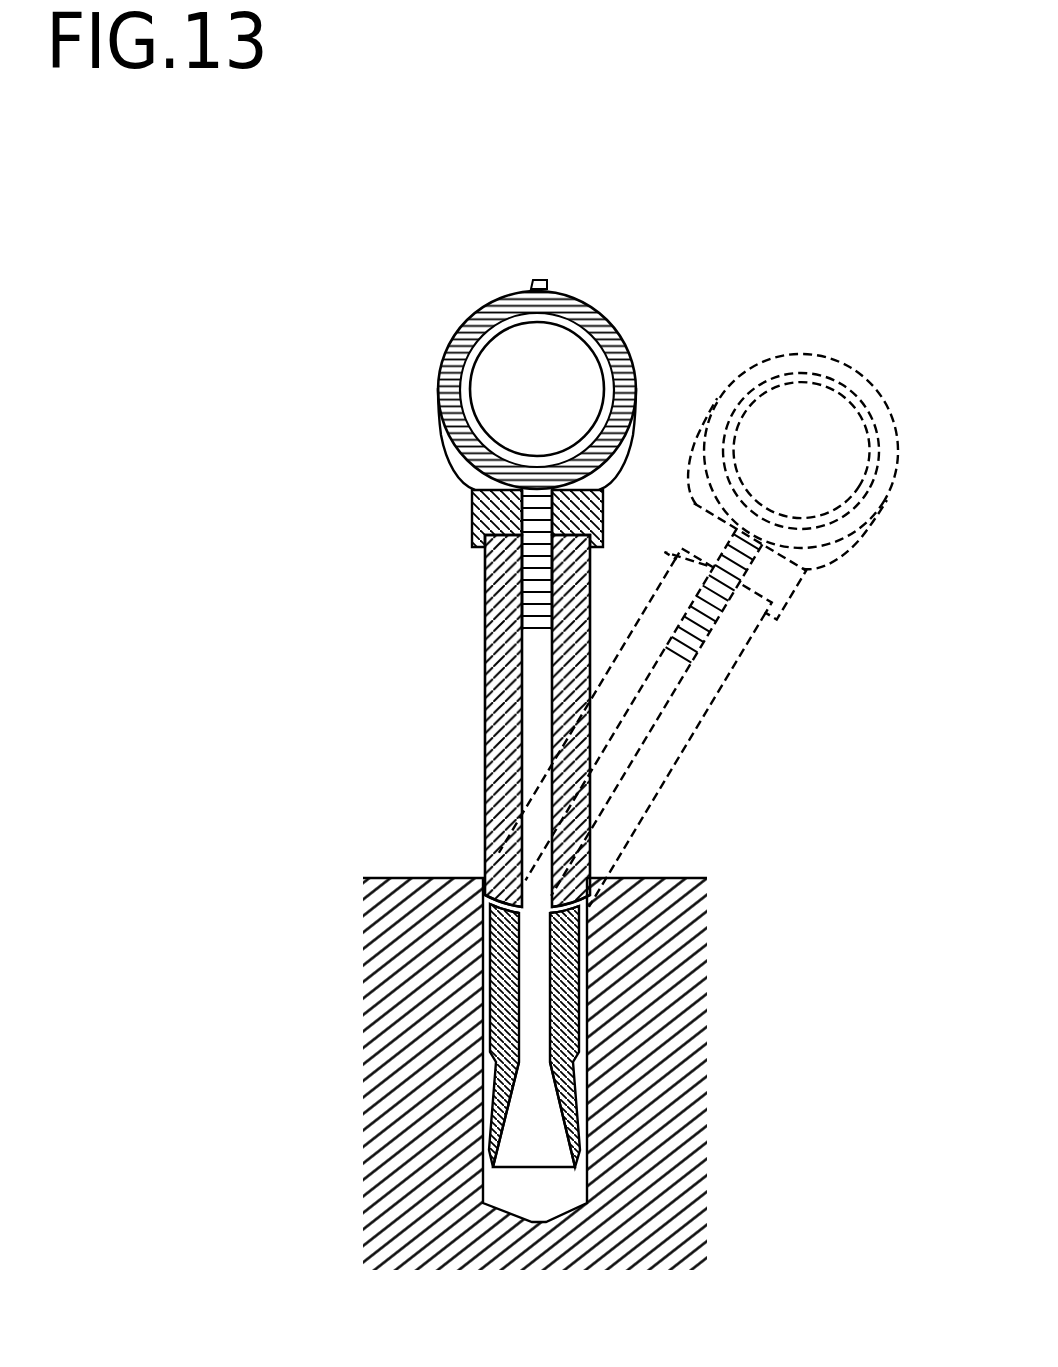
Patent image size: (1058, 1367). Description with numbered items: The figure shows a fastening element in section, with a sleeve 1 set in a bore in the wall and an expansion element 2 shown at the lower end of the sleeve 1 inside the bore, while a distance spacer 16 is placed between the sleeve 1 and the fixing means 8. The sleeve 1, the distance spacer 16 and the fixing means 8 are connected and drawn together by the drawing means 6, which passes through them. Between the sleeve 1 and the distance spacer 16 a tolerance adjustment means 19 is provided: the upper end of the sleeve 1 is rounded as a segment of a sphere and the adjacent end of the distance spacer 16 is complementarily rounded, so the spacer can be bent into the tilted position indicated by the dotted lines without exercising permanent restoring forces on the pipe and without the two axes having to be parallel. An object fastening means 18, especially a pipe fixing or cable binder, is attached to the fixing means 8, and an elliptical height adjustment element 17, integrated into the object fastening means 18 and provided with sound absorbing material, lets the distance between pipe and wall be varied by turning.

The sleeve 1 is at (570, 998).
The expansion cone 2 is at (525, 1143).
The drawing means 6 is at (537, 663).
The fixing means 8 is at (485, 511).
The distance spacer 16 is at (497, 717).
The height adjustment element 17 is at (632, 427).
The object fastening means 18 is at (530, 284).
The tolerance adjustment means 19 is at (523, 897).